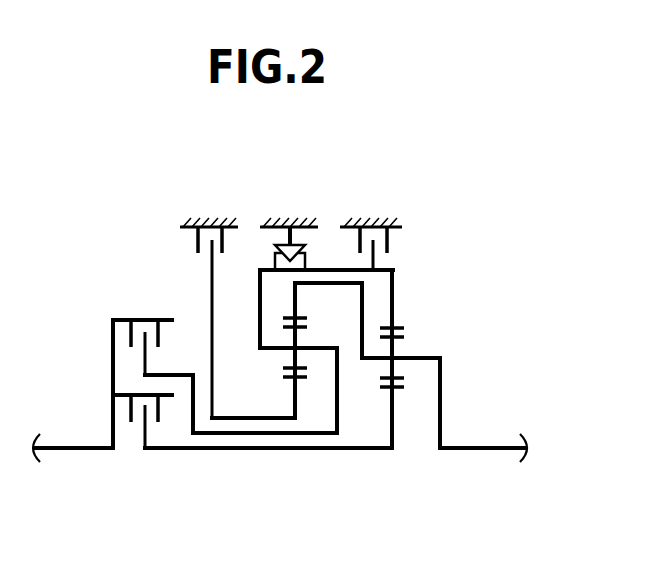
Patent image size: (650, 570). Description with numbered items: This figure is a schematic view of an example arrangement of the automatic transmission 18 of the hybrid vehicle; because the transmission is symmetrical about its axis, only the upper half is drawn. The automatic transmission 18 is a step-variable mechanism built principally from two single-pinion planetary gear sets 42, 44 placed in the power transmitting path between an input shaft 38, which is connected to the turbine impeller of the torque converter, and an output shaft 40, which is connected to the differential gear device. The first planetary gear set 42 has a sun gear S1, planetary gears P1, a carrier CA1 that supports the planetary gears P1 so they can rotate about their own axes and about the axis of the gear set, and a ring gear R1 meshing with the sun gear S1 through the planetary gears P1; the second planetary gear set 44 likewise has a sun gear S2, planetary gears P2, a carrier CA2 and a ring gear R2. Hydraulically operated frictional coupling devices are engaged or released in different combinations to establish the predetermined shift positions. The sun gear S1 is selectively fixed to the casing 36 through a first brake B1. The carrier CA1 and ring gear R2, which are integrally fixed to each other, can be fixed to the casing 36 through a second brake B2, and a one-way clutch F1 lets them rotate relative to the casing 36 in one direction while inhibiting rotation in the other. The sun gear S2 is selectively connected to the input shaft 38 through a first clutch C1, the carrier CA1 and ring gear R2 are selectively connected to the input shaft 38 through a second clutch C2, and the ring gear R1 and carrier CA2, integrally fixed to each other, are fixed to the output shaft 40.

The automatic transmission 18 is at (129, 192).
The casing 36 is at (213, 218).
The input shaft 38 is at (75, 450).
The output shaft 40 is at (482, 450).
The first planetary gear set 42 is at (293, 462).
The second planetary gear set 44 is at (392, 462).
The first brake B1 is at (195, 241).
The second brake B2 is at (390, 241).
The one-way clutch F1 is at (303, 248).
The first clutch C1 is at (119, 407).
The second clutch C2 is at (144, 320).
The ring gear R1 is at (291, 317).
The planetary gear P1 is at (301, 328).
The carrier CA1 is at (290, 351).
The sun gear S1 is at (290, 381).
The ring gear R2 is at (398, 326).
The carrier CA2 is at (418, 357).
The planetary gear P2 is at (386, 377).
The sun gear S2 is at (398, 389).